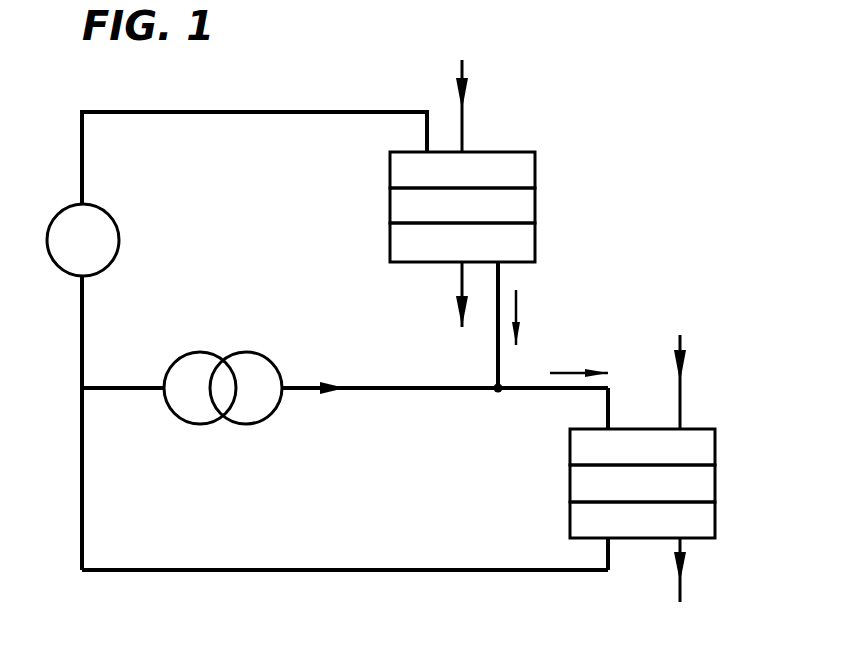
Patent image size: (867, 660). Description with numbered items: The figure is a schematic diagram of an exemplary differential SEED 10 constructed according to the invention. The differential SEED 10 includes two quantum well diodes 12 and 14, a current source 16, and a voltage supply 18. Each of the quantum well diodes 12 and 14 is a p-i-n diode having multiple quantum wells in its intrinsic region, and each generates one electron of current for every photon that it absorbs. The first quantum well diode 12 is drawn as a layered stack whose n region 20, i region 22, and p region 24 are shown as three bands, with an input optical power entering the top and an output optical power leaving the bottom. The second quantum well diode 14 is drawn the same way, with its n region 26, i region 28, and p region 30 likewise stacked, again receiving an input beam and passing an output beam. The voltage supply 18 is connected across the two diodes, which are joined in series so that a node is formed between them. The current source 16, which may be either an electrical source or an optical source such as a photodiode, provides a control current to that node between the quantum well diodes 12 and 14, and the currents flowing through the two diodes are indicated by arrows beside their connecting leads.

The differential SEED 10 is at (166, 82).
The quantum well diode 12 is at (528, 121).
The quantum well diode 14 is at (720, 408).
The current source 16 is at (220, 348).
The voltage supply 18 is at (63, 260).
The n region 20 is at (537, 168).
The i region 22 is at (390, 212).
The p region 24 is at (537, 240).
The n region 26 is at (717, 446).
The i region 28 is at (574, 488).
The p region 30 is at (717, 520).